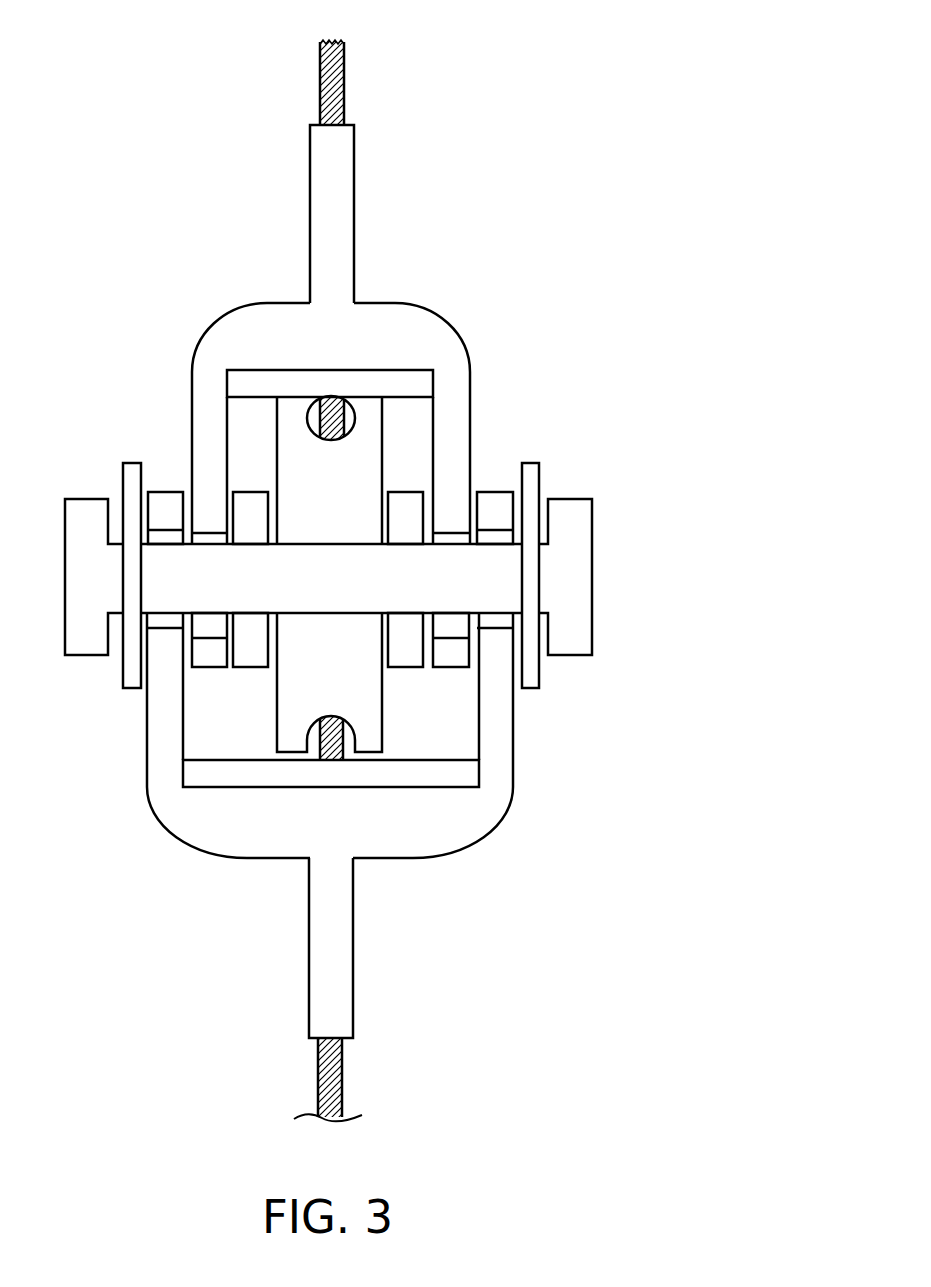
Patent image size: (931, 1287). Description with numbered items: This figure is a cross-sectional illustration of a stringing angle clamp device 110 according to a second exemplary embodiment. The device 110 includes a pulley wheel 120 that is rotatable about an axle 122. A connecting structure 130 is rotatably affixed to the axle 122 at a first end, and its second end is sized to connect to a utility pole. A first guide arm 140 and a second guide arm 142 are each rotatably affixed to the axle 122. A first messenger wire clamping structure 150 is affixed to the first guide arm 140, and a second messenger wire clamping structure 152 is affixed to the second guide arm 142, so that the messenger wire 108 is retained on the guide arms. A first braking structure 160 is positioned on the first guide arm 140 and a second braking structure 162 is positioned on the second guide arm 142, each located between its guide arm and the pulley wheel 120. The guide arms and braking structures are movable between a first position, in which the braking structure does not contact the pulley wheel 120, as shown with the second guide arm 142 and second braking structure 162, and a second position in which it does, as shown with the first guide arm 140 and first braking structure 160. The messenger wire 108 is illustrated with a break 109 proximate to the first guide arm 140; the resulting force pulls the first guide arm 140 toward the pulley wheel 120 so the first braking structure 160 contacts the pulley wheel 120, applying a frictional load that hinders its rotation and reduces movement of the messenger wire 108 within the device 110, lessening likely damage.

The stringing angle clamp device 110 is at (582, 60).
The messenger wire 108 is at (345, 90).
The break 109 is at (343, 45).
The first messenger wire clamping structure 150 is at (364, 206).
The first guide arm 140 is at (363, 333).
The first braking structure 160 is at (240, 382).
The pulley wheel 120 is at (360, 687).
The connecting structure 130 is at (407, 508).
The axle 122 is at (567, 570).
The second guide arm 142 is at (337, 921).
The second braking structure 162 is at (217, 772).
The second messenger wire clamping structure 152 is at (364, 989).